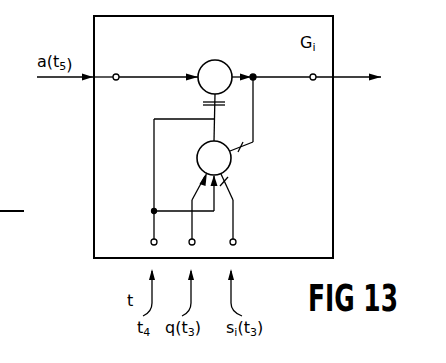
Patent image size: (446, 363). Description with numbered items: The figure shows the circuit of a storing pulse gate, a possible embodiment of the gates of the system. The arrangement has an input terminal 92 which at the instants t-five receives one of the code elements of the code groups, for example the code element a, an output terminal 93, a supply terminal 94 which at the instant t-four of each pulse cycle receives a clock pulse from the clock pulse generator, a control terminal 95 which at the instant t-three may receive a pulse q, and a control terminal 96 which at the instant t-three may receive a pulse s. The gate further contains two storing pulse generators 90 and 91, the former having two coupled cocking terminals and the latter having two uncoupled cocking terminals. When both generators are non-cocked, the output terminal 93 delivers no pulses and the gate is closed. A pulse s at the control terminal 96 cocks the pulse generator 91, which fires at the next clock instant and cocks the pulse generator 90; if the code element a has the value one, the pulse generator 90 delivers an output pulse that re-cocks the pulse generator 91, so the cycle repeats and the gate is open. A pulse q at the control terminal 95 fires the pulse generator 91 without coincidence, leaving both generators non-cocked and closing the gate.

The storing pulse generator 90 is at (215, 77).
The storing pulse generator 91 is at (214, 158).
The input terminal 92 is at (118, 64).
The output terminal 93 is at (312, 66).
The supply terminal 94 is at (139, 242).
The control terminal 95 is at (180, 242).
The control terminal 96 is at (246, 242).